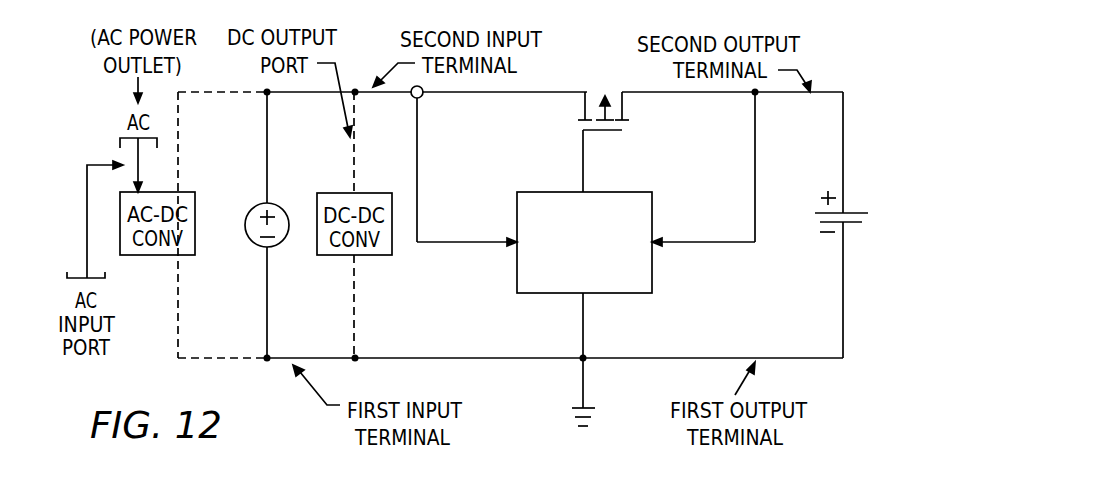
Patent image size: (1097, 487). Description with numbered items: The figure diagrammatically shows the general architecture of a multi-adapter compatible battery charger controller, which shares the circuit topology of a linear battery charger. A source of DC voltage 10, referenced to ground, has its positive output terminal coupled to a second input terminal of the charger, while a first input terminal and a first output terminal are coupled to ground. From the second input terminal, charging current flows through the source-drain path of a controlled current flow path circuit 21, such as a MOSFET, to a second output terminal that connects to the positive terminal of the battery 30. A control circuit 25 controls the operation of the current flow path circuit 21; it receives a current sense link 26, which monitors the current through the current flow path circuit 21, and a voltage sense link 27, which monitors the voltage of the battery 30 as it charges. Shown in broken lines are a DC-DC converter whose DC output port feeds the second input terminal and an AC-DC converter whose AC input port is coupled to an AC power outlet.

The source of DC voltage 10 is at (256, 206).
The current flow path circuit 21 is at (608, 130).
The control circuit 25 is at (537, 192).
The current sense link 26 is at (417, 212).
The voltage sense link 27 is at (752, 198).
The battery 30 is at (815, 219).